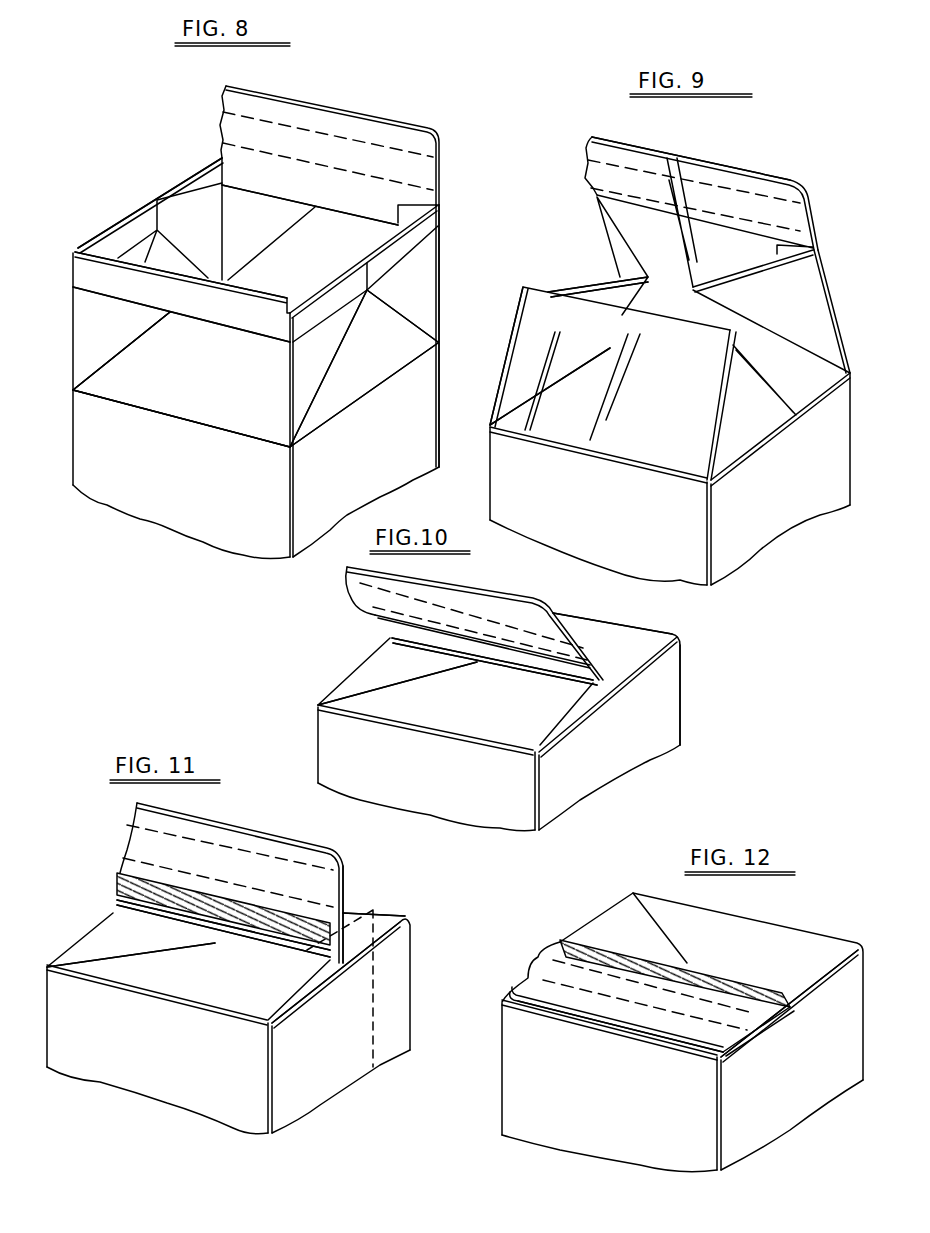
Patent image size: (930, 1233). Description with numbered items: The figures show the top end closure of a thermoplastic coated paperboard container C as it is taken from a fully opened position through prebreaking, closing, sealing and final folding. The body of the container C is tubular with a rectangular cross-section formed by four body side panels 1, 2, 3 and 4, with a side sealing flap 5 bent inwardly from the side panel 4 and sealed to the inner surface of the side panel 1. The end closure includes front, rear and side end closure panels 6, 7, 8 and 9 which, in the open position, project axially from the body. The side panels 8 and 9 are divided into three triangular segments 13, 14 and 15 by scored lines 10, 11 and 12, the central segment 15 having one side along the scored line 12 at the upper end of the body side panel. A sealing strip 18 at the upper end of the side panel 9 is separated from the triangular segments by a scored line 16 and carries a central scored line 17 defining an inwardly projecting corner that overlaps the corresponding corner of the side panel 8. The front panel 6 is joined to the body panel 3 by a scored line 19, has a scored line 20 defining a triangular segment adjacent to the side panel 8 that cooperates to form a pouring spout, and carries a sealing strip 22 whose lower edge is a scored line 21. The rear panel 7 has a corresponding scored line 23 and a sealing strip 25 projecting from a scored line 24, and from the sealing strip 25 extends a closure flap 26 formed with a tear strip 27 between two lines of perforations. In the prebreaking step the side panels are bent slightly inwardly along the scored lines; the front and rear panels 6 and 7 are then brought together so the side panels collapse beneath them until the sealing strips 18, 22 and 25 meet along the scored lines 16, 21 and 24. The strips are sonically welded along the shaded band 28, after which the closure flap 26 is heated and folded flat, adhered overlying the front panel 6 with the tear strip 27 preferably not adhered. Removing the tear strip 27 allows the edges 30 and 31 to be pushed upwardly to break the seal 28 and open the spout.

In FIG. 8, the body side panel 1 is at (441, 407).
In FIG. 9, the body side panel 1 is at (857, 478).
In FIG. 10, the body side panel 1 is at (680, 673).
In FIG. 11, the body side panel 1 is at (413, 960).
In FIG. 12, the body side panel 1 is at (865, 1048).
In FIG. 8, the body side panel 2 is at (73, 432).
In FIG. 9, the body side panel 2 is at (490, 490).
In FIG. 10, the body side panel 2 is at (318, 750).
In FIG. 11, the body side panel 2 is at (47, 1020).
In FIG. 12, the body side panel 2 is at (502, 1093).
In FIG. 8, the body side panel 3 is at (140, 503).
In FIG. 9, the body side panel 3 is at (637, 547).
In FIG. 10, the body side panel 3 is at (482, 817).
In FIG. 11, the body side panel 3 is at (213, 1107).
In FIG. 12, the body side panel 3 is at (632, 1147).
In FIG. 8, the body side panel 4 is at (380, 487).
In FIG. 9, the body side panel 4 is at (793, 520).
In FIG. 10, the body side panel 4 is at (613, 760).
In FIG. 11, the body side panel 4 is at (347, 1073).
In FIG. 12, the body side panel 4 is at (762, 1132).
In FIG. 8, the side sealing flap 5 is at (422, 213).
In FIG. 9, the side sealing flap 5 is at (803, 253).
In FIG. 11, the side sealing flap 5 is at (387, 1047).
In FIG. 8, the front end closure panel 6 is at (213, 405).
In FIG. 9, the front end closure panel 6 is at (570, 418).
In FIG. 10, the front end closure panel 6 is at (397, 697).
In FIG. 11, the front end closure panel 6 is at (203, 980).
In FIG. 8, the rear end closure panel 7 is at (347, 228).
In FIG. 9, the rear end closure panel 7 is at (713, 150).
In FIG. 10, the rear end closure panel 7 is at (617, 643).
In FIG. 11, the rear end closure panel 7 is at (380, 910).
In FIG. 12, the rear end closure panel 7 is at (767, 940).
In FIG. 8, the side end closure panel 8 is at (136, 200).
In FIG. 9, the side end closure panel 8 is at (587, 272).
In FIG. 8, the side end closure panel 9 is at (371, 378).
In FIG. 9, the side end closure panel 9 is at (820, 343).
In FIG. 8, the scored line 10 is at (323, 383).
In FIG. 8, the scored line 11 is at (425, 320).
In FIG. 8, the scored line 12 is at (328, 427).
In FIG. 8, the triangular segment 13 is at (430, 282).
In FIG. 9, the triangular segment 13 is at (820, 312).
In FIG. 8, the triangular segment 14 is at (303, 377).
In FIG. 8, the triangular segment 15 is at (403, 358).
In FIG. 9, the triangular segment 15 is at (807, 390).
In FIG. 8, the scored line 16 is at (385, 277).
In FIG. 8, the scored line 17 is at (372, 278).
In FIG. 9, the scored line 17 is at (693, 290).
In FIG. 8, the sealing strip 18 is at (203, 183).
In FIG. 8, the scored line 19 is at (170, 412).
In FIG. 8, the scored line 20 is at (140, 338).
In FIG. 9, the scored line 20 is at (557, 382).
In FIG. 10, the scored line 20 is at (423, 677).
In FIG. 11, the scored line 20 is at (153, 950).
In FIG. 12, the scored line 20 is at (518, 1003).
In FIG. 8, the scored line 21 is at (235, 327).
In FIG. 8, the sealing strip 22 is at (143, 285).
In FIG. 9, the sealing strip 22 is at (690, 355).
In FIG. 10, the sealing strip 22 is at (543, 657).
In FIG. 11, the sealing strip 22 is at (297, 940).
In FIG. 8, the scored line 23 is at (254, 262).
In FIG. 8, the scored line 24 is at (350, 212).
In FIG. 8, the sealing strip 25 is at (290, 187).
In FIG. 9, the sealing strip 25 is at (627, 212).
In FIG. 11, the sealing strip 25 is at (355, 940).
In FIG. 8, the closure flap 26 is at (437, 130).
In FIG. 9, the closure flap 26 is at (760, 173).
In FIG. 10, the closure flap 26 is at (527, 597).
In FIG. 11, the closure flap 26 is at (337, 852).
In FIG. 12, the closure flap 26 is at (527, 990).
In FIG. 8, the tear strip 27 is at (428, 172).
In FIG. 9, the tear strip 27 is at (797, 216).
In FIG. 10, the tear strip 27 is at (363, 590).
In FIG. 11, the tear strip 27 is at (123, 840).
In FIG. 12, the tear strip 27 is at (538, 967).
In FIG. 11, the seal 28 is at (120, 890).
In FIG. 12, the seal 28 is at (570, 950).
In FIG. 8, the edge 30 is at (73, 356).
In FIG. 9, the edge 30 is at (500, 368).
In FIG. 8, the edge 31 is at (228, 207).
In FIG. 8, the container C is at (105, 220).
In FIG. 9, the container C is at (597, 260).
In FIG. 10, the container C is at (693, 717).
In FIG. 11, the container C is at (420, 927).
In FIG. 12, the container C is at (840, 930).